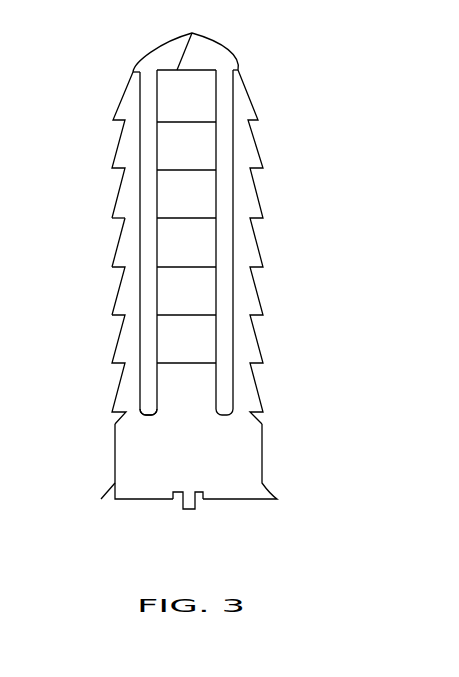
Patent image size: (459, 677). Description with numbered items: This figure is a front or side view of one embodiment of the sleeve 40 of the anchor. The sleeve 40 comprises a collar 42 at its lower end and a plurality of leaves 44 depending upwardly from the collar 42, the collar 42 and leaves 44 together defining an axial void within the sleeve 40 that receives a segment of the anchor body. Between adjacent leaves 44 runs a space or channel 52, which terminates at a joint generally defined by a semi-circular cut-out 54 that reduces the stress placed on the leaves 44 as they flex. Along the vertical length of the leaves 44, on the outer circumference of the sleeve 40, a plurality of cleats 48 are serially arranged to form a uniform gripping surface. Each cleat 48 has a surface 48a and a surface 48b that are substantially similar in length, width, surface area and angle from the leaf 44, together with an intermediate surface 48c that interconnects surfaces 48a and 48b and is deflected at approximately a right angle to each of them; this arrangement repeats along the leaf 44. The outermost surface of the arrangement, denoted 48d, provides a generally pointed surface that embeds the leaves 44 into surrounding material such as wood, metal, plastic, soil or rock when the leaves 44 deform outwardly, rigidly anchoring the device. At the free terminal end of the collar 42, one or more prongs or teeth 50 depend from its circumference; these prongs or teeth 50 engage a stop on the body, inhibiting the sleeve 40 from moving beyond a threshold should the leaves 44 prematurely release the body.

The sleeve 40 is at (67, 111).
The collar 42 is at (196, 460).
The leaves 44 is at (185, 39).
The cleats 48 is at (196, 155).
The surface 48a is at (115, 193).
The surface 48b is at (113, 262).
The surface 48c is at (113, 237).
The outermost surface 48d is at (112, 219).
The prongs or teeth 50 is at (188, 510).
The channel 52 is at (148, 343).
The semi-circular cut-out 54 is at (152, 418).